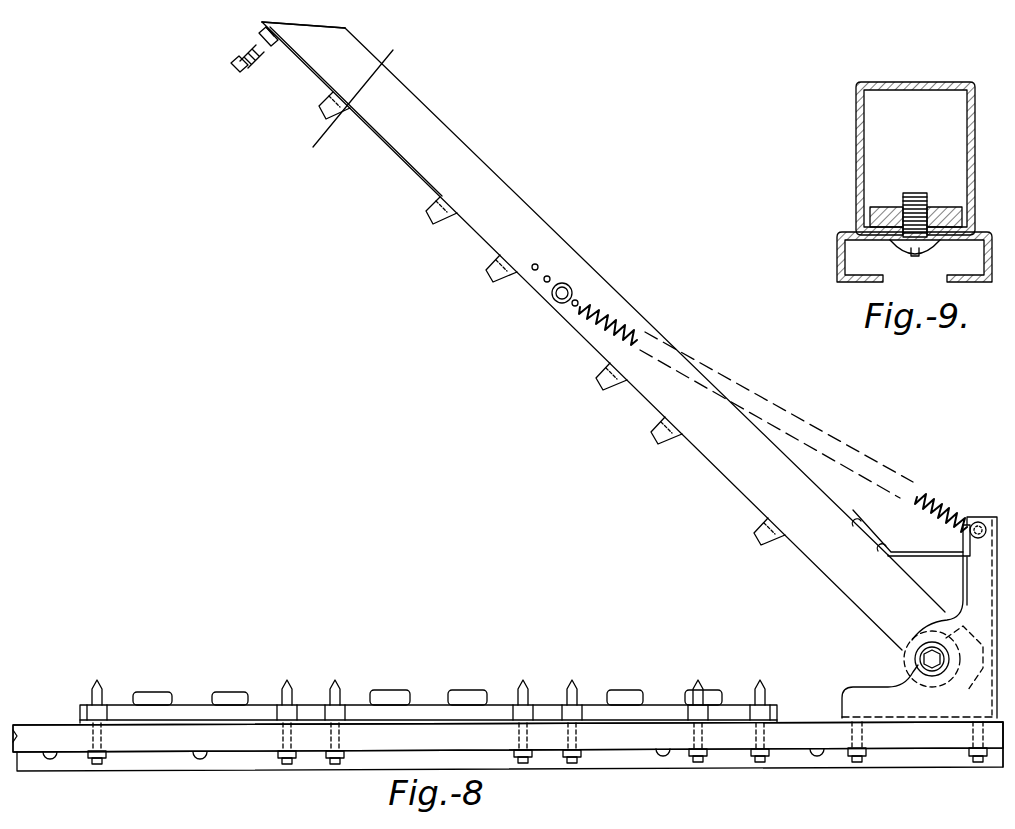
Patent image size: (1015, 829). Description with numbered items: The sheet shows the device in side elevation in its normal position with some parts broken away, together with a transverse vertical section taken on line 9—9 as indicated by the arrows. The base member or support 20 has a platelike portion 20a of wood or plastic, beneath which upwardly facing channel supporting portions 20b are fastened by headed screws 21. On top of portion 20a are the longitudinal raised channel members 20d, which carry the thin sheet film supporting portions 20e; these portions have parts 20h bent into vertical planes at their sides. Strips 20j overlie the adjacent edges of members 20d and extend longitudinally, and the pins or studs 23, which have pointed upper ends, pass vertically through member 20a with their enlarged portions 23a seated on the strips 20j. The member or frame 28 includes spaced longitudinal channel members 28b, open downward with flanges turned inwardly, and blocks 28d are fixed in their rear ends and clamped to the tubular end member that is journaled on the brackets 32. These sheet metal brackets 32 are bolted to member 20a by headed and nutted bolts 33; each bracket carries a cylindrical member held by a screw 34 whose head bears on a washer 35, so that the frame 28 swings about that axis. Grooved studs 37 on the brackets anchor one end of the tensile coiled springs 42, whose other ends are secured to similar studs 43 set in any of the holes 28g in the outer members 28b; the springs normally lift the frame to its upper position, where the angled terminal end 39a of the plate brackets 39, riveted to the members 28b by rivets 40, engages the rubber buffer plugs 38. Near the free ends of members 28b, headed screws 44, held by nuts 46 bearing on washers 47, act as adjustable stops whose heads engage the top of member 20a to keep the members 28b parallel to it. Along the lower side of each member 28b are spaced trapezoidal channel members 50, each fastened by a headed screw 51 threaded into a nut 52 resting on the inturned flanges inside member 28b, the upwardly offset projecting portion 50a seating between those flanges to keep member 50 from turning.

In FIG. 8, the section line 9 is at (309, 129).
In FIG. 8, the base member or support 20 is at (38, 720).
In FIG. 8, the platelike portion 20a is at (811, 728).
In FIG. 8, the supporting portions 20b is at (286, 766).
In FIG. 8, the spaced members 20d is at (780, 708).
In FIG. 8, the film supporting portions 20e is at (254, 691).
In FIG. 8, the side parts 20h is at (151, 691).
In FIG. 8, the strips 20j is at (185, 718).
In FIG. 8, the headed screws 21 is at (50, 762).
In FIG. 8, the pins or studs 23 is at (91, 690).
In FIG. 8, the enlarged portions 23a is at (325, 712).
In FIG. 8, the member or frame 28 is at (716, 474).
In FIG. 8, the longitudinally extending portions 28b is at (493, 172).
In FIG. 9, the longitudinally extending portions 28b is at (856, 174).
In FIG. 8, the blocks 28d is at (938, 617).
In FIG. 8, the holes 28g is at (549, 276).
In FIG. 8, the brackets 32 is at (886, 691).
In FIG. 8, the headed and nutted bolts 33 is at (855, 766).
In FIG. 8, the screw 34 is at (919, 660).
In FIG. 8, the washer 35 is at (912, 655).
In FIG. 8, the grooved studs 37 is at (982, 521).
In FIG. 8, the buffer plug 38 is at (980, 560).
In FIG. 8, the plate brackets 39 is at (952, 558).
In FIG. 8, the terminal end 39a is at (963, 540).
In FIG. 8, the rivets 40 is at (860, 521).
In FIG. 8, the tensile coiled springs 42 is at (634, 303).
In FIG. 8, the studs 43 is at (572, 283).
In FIG. 8, the headed screws 44 is at (236, 68).
In FIG. 8, the nuts 46 is at (258, 38).
In FIG. 8, the washers 47 is at (282, 50).
In FIG. 8, the spaced members 50 is at (497, 268).
In FIG. 9, the spaced members 50 is at (837, 254).
In FIG. 9, the projecting portion 50a is at (900, 205).
In FIG. 9, the headed screw 51 is at (930, 250).
In FIG. 9, the nut 52 is at (940, 207).